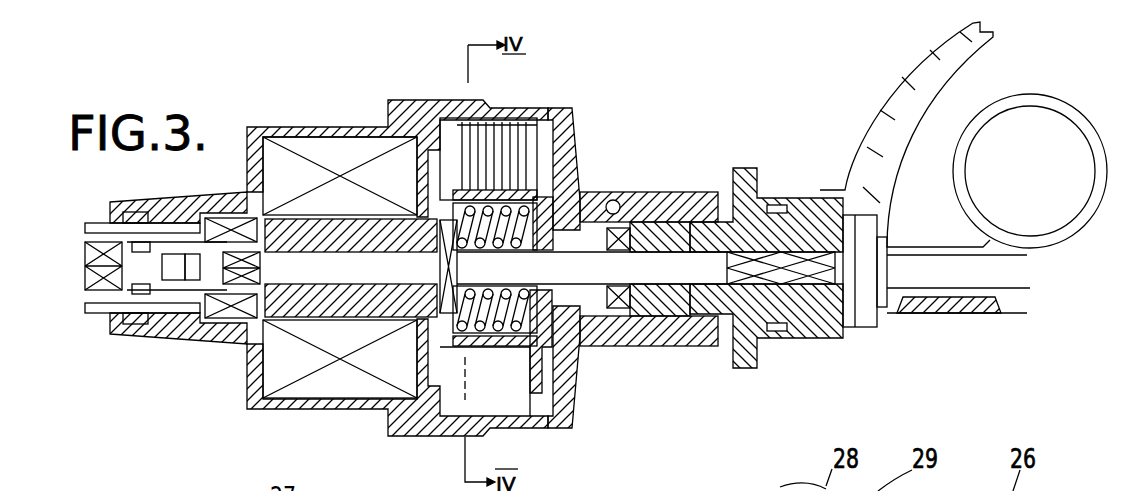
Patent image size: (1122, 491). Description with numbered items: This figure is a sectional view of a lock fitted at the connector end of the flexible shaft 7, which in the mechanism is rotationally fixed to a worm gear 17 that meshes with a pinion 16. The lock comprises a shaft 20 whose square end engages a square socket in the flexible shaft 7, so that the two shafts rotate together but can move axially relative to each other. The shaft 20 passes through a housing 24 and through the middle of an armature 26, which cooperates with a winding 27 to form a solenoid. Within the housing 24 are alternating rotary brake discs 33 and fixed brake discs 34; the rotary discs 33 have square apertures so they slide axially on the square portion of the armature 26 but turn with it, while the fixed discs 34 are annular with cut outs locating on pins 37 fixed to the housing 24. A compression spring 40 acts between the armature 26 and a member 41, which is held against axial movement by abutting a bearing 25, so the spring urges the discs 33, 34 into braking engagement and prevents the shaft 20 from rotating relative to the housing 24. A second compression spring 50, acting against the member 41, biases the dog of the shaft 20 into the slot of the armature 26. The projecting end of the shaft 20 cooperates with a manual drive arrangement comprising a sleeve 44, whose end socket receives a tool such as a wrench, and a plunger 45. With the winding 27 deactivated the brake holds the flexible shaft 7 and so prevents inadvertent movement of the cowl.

The flexible shaft 7 is at (802, 293).
The pinion 16 is at (973, 123).
The worm gear 17 is at (1008, 297).
The shaft 20 is at (588, 203).
The housing 24 is at (397, 413).
The bearing 25 is at (620, 307).
The armature 26 is at (377, 205).
The winding 27 is at (287, 170).
The rotary brake discs 33 is at (470, 148).
The fixed brake discs 34 is at (485, 153).
The pins 37 is at (553, 117).
The compression spring 40 is at (520, 203).
The member 41 is at (572, 332).
The sleeve 44 is at (162, 300).
The plunger 45 is at (188, 288).
The compression spring 50 is at (567, 336).